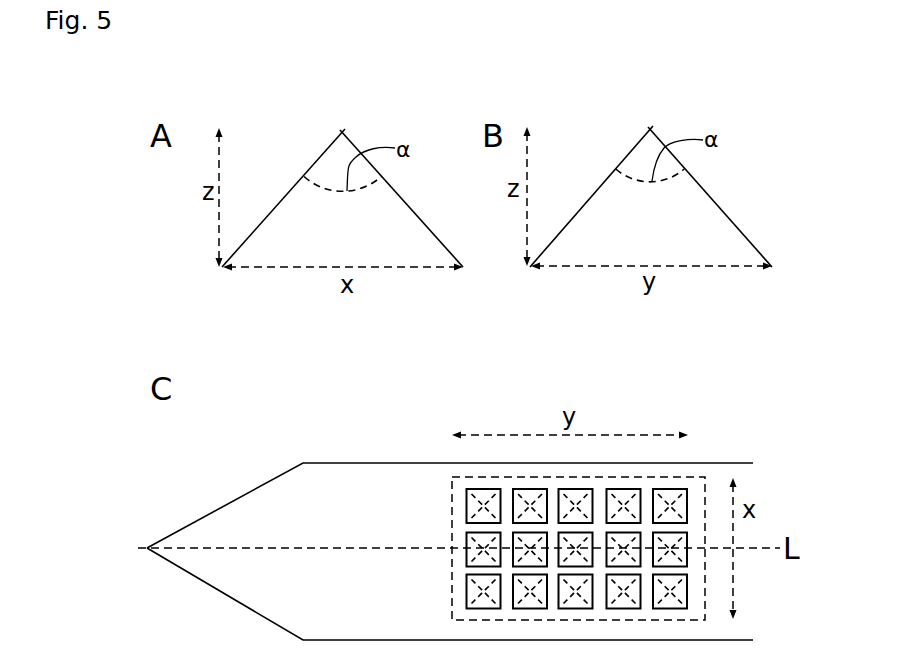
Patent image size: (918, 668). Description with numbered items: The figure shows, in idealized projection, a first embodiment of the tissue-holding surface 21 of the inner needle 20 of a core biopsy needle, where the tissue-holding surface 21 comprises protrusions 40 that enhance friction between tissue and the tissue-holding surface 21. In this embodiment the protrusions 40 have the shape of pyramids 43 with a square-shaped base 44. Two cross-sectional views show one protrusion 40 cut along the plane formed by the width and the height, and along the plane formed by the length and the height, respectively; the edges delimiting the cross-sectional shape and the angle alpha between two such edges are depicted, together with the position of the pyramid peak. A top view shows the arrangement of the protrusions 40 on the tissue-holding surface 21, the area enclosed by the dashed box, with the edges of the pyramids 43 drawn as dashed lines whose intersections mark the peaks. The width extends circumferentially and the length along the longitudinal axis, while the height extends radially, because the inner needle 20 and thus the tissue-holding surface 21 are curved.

The inner needle 20 is at (398, 465).
The tissue-holding surface 21 is at (647, 523).
The protrusions 40 is at (570, 497).
The pyramids 43 is at (619, 445).
The square-shaped base 44 is at (583, 493).